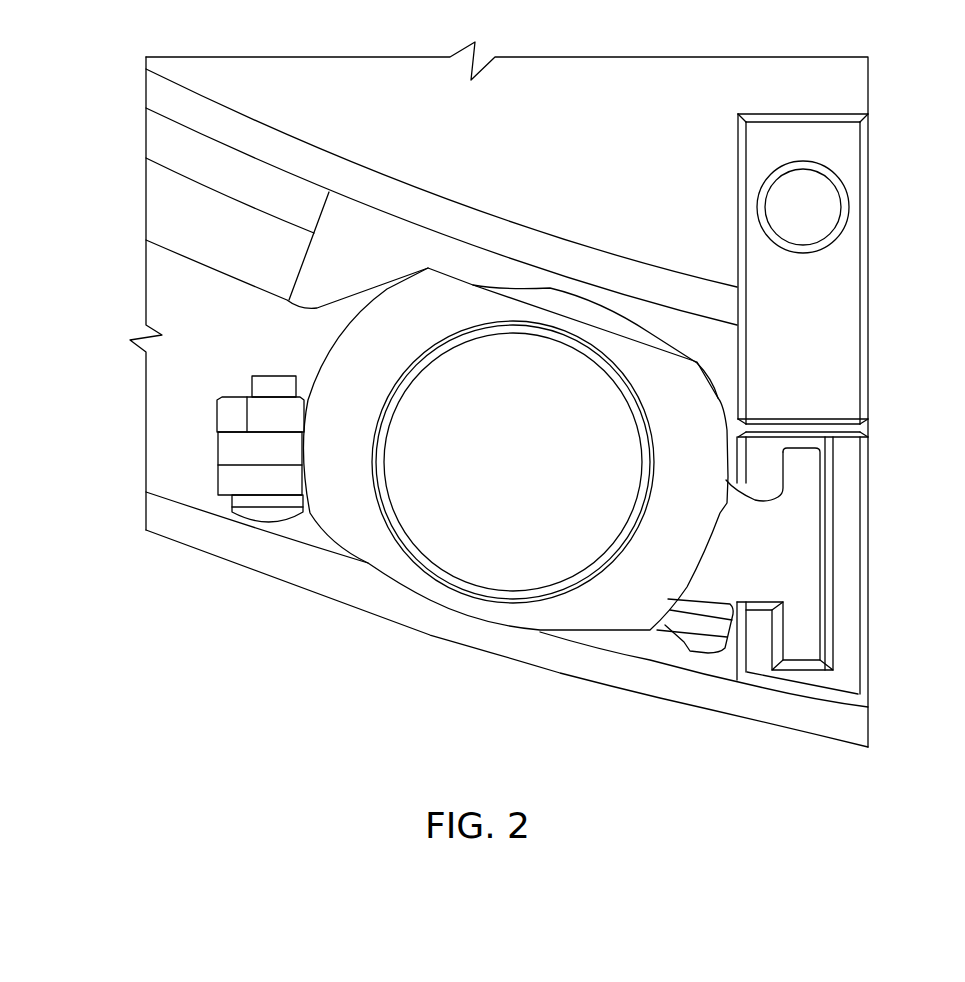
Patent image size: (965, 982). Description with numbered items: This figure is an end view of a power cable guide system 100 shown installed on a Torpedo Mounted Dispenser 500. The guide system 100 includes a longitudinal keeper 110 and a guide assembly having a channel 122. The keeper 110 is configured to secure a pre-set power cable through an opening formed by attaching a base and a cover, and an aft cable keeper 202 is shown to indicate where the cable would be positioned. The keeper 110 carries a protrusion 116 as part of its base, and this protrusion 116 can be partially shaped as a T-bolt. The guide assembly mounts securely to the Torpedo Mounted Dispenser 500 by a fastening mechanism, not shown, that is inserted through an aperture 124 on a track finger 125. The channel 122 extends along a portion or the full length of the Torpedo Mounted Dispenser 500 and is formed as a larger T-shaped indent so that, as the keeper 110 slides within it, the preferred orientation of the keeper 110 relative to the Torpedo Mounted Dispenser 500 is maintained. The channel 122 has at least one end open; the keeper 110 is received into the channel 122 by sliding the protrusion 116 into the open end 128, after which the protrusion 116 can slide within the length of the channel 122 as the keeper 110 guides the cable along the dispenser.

The guide system 100 is at (256, 605).
The longitudinal keeper 110 is at (218, 473).
The protrusion 116 is at (820, 515).
The channel 122 is at (849, 600).
The aperture 124 is at (845, 206).
The track finger 125 is at (860, 235).
The open end 128 is at (793, 662).
The aft cable keeper 202 is at (370, 562).
The Torpedo Mounted Dispenser 500 is at (198, 135).